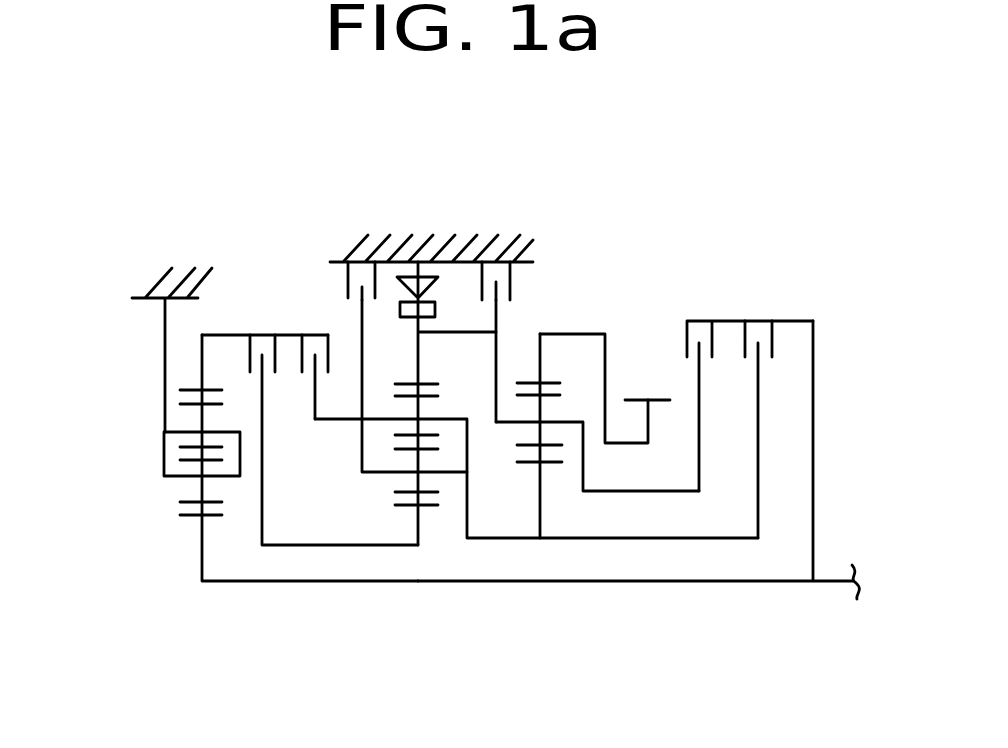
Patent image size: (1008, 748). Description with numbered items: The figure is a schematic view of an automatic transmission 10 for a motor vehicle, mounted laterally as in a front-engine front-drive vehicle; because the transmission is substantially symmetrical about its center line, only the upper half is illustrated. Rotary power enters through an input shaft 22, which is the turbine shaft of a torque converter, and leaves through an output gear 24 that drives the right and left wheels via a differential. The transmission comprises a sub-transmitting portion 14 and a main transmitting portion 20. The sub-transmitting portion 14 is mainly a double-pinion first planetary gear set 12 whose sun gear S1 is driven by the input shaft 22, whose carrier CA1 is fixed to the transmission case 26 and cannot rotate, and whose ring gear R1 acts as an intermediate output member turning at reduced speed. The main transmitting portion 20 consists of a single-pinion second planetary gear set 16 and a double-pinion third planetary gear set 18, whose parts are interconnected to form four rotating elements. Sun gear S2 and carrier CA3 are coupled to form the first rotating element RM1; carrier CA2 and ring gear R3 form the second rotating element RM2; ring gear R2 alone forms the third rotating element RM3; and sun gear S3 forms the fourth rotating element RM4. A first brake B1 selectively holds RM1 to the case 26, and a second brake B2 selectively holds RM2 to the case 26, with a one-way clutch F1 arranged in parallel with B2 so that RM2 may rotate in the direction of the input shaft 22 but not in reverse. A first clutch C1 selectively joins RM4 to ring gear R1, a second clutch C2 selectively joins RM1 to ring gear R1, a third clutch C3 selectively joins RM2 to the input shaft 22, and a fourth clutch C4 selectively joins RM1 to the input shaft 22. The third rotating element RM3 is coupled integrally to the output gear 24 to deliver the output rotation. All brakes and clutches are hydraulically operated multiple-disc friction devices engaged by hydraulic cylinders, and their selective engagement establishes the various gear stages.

The automatic transmission 10 is at (745, 203).
The first planetary gear set 12 is at (219, 328).
The sub-transmitting portion 14 is at (205, 592).
The second planetary gear set 16 is at (548, 280).
The third planetary gear set 18 is at (428, 558).
The main transmitting portion 20 is at (663, 262).
The input shaft 22 is at (842, 582).
The output gear 24 is at (637, 395).
The transmission case 26 is at (158, 283).
The first brake B1 is at (357, 249).
The second brake B2 is at (506, 249).
The first clutch C1 is at (257, 336).
The second clutch C2 is at (325, 359).
The third clutch C3 is at (750, 387).
The fourth clutch C4 is at (776, 411).
The one-way clutch F1 is at (437, 289).
The ring gear R1 is at (190, 388).
The ring gear R2 is at (577, 365).
The ring gear R3 is at (410, 382).
The carrier CA1 is at (164, 455).
The carrier CA2 is at (547, 424).
The carrier CA3 is at (393, 472).
The sun gear S1 is at (195, 517).
The sun gear S2 is at (530, 463).
The sun gear S3 is at (410, 505).
The first rotating element RM1 is at (490, 540).
The second rotating element RM2 is at (497, 353).
The third rotating element RM3 is at (545, 336).
The fourth rotating element RM4 is at (397, 545).